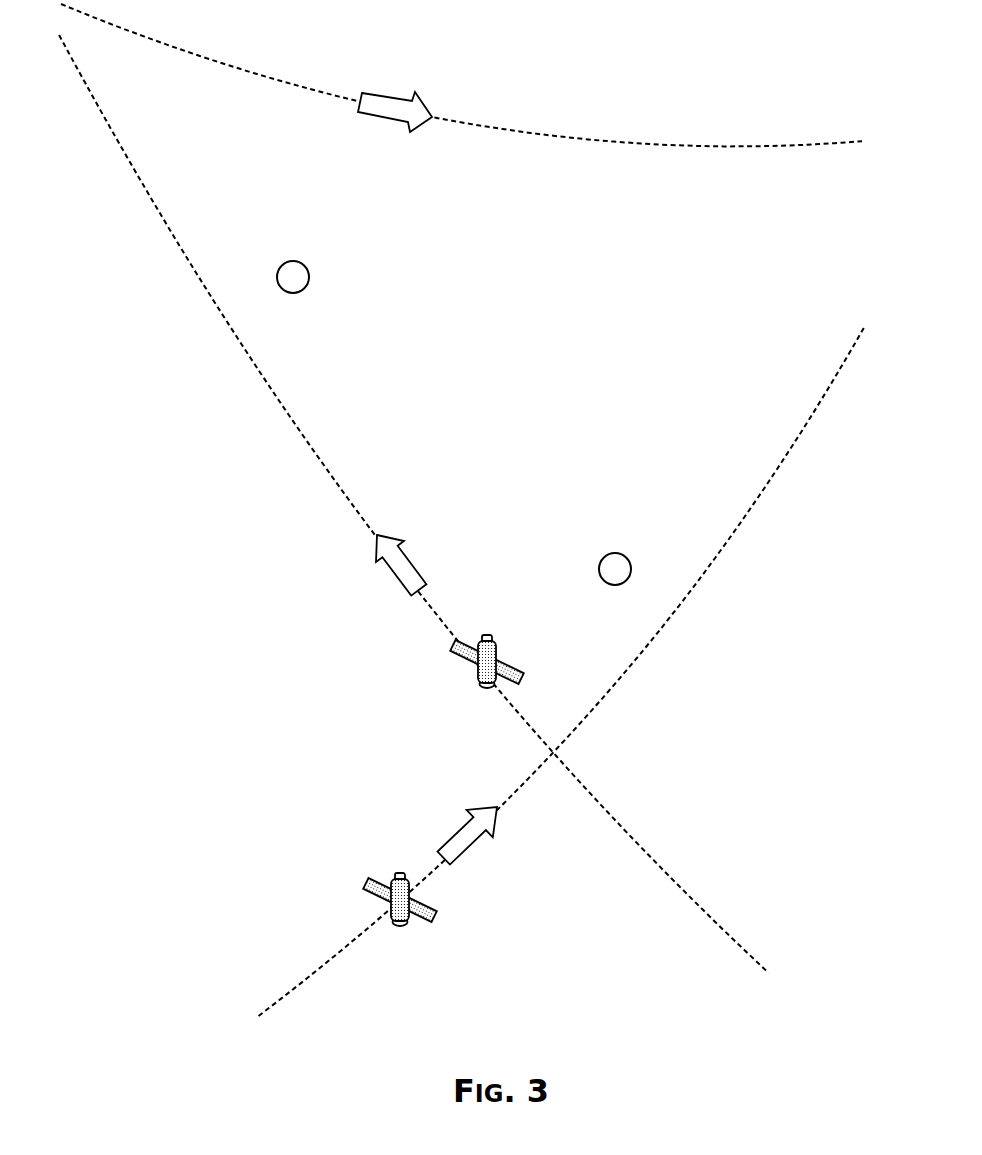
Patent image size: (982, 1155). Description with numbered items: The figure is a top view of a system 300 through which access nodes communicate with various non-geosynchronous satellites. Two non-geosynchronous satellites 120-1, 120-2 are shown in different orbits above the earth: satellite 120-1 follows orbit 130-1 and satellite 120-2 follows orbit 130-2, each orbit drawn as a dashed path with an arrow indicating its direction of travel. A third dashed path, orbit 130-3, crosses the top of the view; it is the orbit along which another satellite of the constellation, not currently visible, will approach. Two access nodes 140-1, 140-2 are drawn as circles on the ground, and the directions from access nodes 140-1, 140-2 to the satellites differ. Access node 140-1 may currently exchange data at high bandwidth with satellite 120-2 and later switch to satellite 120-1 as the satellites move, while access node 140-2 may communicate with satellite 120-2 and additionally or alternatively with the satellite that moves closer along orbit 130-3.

The system 300 is at (158, 929).
The non-geosynchronous satellite 120-1 is at (393, 878).
The non-geosynchronous satellite 120-2 is at (508, 659).
The orbit 130-1 is at (797, 437).
The orbit 130-2 is at (373, 523).
The orbit 130-3 is at (647, 143).
The access node 140-1 is at (625, 553).
The access node 140-2 is at (302, 262).